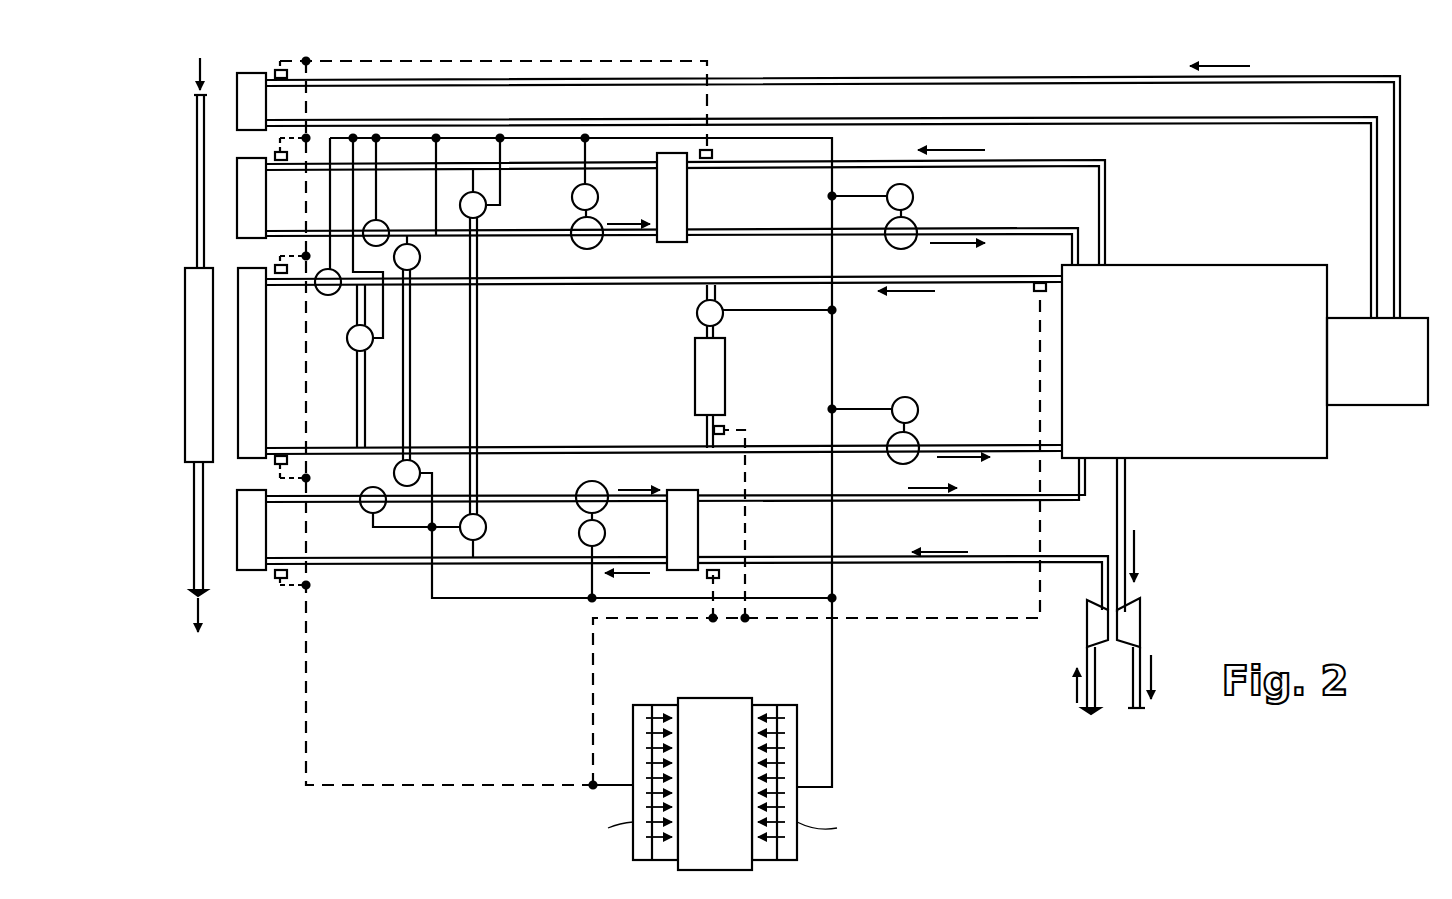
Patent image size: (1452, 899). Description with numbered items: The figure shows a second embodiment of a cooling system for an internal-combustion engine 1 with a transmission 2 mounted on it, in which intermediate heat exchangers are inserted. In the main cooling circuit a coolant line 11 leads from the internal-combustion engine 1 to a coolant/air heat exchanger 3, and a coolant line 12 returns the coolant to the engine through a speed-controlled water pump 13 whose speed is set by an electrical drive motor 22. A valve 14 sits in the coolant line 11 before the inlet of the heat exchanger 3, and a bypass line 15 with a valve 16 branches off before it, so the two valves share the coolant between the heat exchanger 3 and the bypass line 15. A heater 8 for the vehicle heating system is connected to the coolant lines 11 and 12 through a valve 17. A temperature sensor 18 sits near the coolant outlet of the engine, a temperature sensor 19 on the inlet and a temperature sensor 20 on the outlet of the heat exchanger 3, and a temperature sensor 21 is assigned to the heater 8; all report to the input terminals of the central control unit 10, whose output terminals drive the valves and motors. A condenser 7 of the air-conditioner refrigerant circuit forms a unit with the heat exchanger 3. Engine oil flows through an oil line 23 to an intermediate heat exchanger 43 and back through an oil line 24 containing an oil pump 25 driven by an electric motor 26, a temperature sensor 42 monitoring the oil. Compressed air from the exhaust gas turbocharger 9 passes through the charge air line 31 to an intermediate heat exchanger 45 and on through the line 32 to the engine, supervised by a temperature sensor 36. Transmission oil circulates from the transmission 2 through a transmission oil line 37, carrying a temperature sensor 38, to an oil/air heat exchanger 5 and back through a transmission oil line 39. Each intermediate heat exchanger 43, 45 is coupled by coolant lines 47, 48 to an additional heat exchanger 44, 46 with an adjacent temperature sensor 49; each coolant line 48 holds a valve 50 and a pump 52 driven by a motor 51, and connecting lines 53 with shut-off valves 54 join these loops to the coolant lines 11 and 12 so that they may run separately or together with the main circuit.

The internal-combustion engine 1 is at (1270, 456).
The transmission 2 is at (1386, 405).
The heat exchanger 3 is at (252, 388).
The heat exchanger 5 is at (242, 72).
The condenser 7 is at (209, 325).
The heater 8 is at (718, 376).
The exhaust gas turbocharger 9 is at (1133, 608).
The central control unit 10 is at (710, 712).
The coolant line 11 is at (612, 286).
The coolant line 12 is at (609, 446).
The water pump 13 is at (917, 440).
The valve 14 is at (333, 269).
The bypass line 15 is at (357, 370).
The valve 16 is at (350, 334).
The valve 17 is at (722, 318).
The temperature sensor 18 is at (1038, 296).
The temperature sensor 19 is at (278, 265).
The temperature sensor 20 is at (274, 464).
The temperature sensor 21 is at (723, 428).
The electrical drive motor 22 is at (913, 398).
The oil line 23 is at (1107, 193).
The oil line 24 is at (1020, 232).
The oil pump 25 is at (914, 224).
The electric motor 26 is at (914, 197).
The charge air line 31 is at (927, 564).
The line 32 is at (955, 503).
The temperature sensor 36 is at (708, 577).
The transmission oil line 37 is at (938, 77).
The temperature sensor 38 is at (278, 66).
The transmission oil line 39 is at (840, 122).
The temperature sensor 42 is at (717, 157).
The intermediate heat exchanger 43 is at (692, 205).
The additional heat exchanger 44 is at (242, 200).
The intermediate heat exchanger 45 is at (688, 500).
The additional heat exchanger 46 is at (252, 573).
The coolant line 47 is at (517, 170).
The coolant line 48 is at (515, 238).
The temperature sensor 49 is at (274, 152).
The valve 50 is at (383, 224).
The motor 51 is at (572, 201).
The pump 52 is at (603, 248).
The connecting line 53 is at (394, 276).
The valve 54 is at (420, 262).